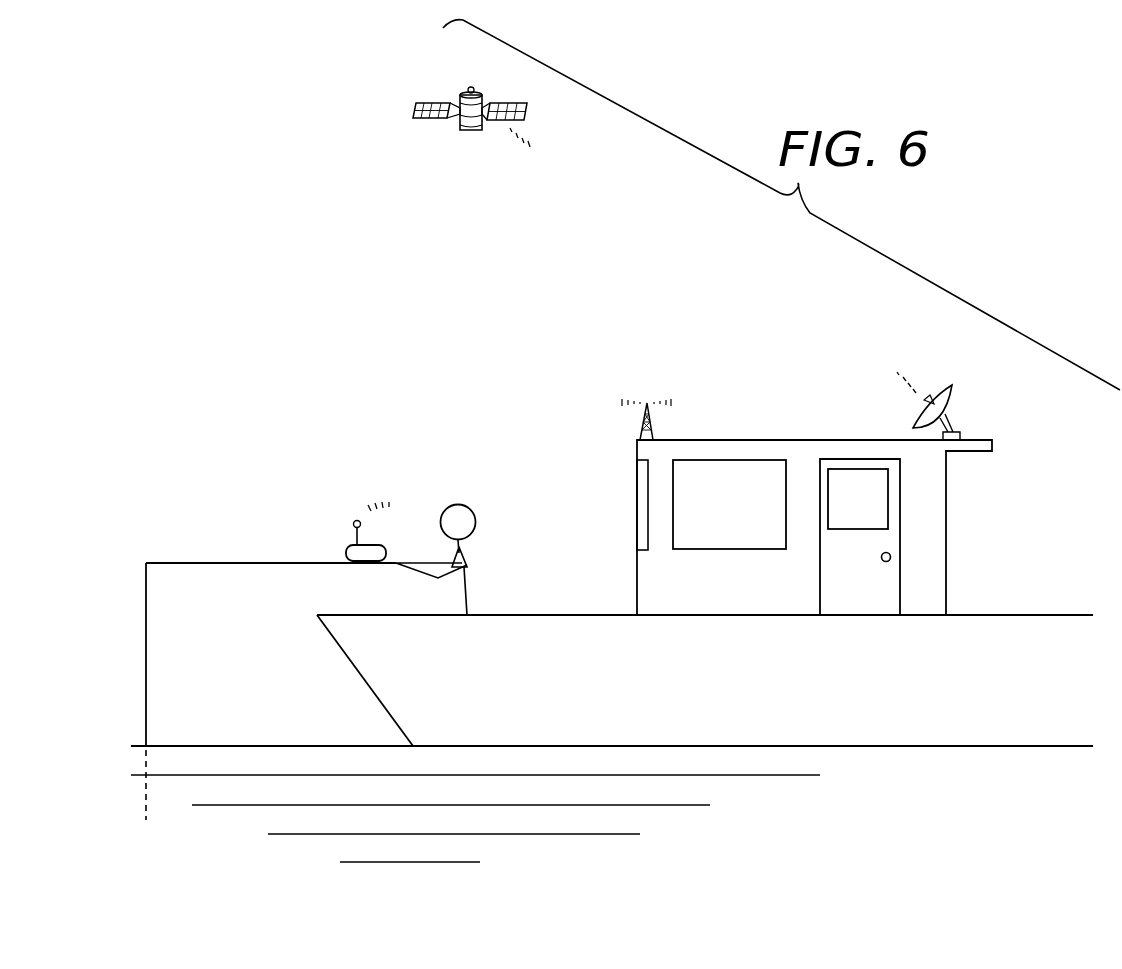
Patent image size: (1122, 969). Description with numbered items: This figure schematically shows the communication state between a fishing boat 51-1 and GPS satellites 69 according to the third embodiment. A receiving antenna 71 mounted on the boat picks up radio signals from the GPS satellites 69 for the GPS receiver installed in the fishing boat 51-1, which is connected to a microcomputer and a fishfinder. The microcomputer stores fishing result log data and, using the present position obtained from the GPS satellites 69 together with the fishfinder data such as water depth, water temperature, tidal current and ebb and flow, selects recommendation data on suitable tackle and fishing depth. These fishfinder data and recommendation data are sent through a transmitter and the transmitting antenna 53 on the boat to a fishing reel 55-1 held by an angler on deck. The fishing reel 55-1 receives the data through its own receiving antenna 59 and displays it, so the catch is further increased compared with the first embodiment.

The fishing boat 51-1 is at (935, 723).
The transmitting antenna 53 is at (642, 424).
The fishing reel 55-1 is at (346, 552).
The receiving antenna 59 is at (351, 532).
The GPS satellites 69 is at (468, 131).
The receiving antenna 71 is at (955, 398).